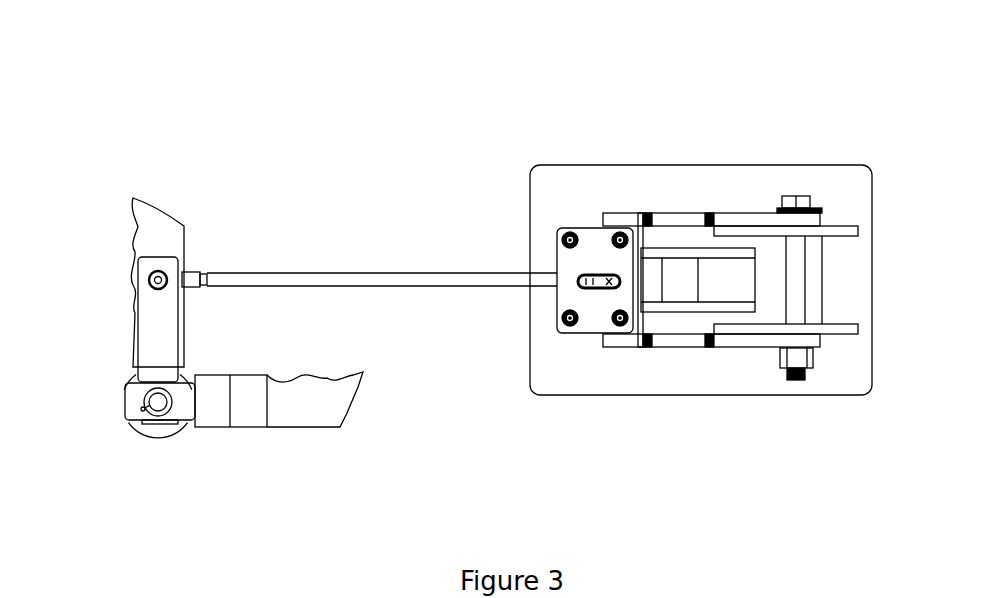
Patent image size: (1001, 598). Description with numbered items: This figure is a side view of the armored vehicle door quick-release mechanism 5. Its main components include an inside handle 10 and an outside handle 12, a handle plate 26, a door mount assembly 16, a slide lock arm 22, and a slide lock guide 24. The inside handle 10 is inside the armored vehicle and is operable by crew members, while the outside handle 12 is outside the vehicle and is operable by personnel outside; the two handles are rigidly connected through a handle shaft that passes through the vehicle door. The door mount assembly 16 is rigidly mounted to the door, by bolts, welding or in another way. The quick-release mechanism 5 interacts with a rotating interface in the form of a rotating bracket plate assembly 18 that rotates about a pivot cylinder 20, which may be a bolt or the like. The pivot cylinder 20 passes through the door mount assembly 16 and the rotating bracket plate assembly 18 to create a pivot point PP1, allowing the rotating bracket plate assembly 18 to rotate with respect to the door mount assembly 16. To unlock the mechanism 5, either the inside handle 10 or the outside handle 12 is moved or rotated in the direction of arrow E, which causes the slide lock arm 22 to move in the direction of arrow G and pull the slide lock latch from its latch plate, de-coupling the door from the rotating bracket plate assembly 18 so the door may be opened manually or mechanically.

The armored vehicle door quick-release mechanism 5 is at (400, 132).
The inside handle 10 is at (250, 428).
The outside handle 12 is at (176, 232).
The door mount assembly 16 is at (727, 216).
The rotating bracket plate assembly 18 is at (740, 231).
The pivot cylinder 20 is at (806, 277).
The slide lock arm 22 is at (336, 279).
The slide lock guide 24 is at (592, 244).
The handle plate 26 is at (160, 322).
The pivot point PP1 is at (796, 181).
The direction of slide lock arm movement G is at (425, 307).
The direction of handle rotation E is at (184, 470).